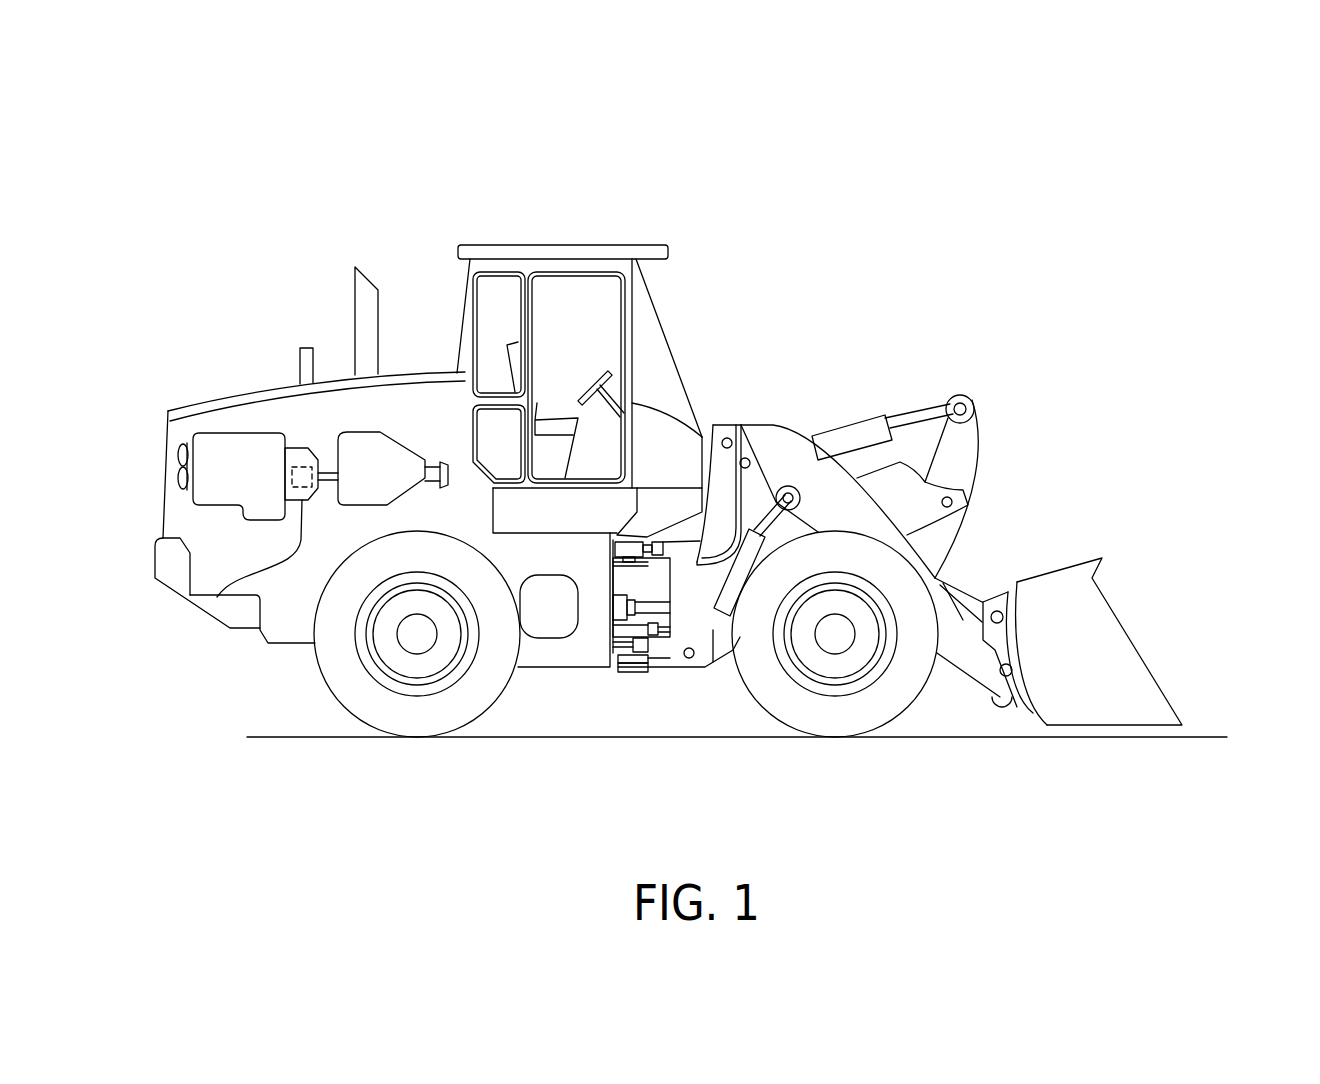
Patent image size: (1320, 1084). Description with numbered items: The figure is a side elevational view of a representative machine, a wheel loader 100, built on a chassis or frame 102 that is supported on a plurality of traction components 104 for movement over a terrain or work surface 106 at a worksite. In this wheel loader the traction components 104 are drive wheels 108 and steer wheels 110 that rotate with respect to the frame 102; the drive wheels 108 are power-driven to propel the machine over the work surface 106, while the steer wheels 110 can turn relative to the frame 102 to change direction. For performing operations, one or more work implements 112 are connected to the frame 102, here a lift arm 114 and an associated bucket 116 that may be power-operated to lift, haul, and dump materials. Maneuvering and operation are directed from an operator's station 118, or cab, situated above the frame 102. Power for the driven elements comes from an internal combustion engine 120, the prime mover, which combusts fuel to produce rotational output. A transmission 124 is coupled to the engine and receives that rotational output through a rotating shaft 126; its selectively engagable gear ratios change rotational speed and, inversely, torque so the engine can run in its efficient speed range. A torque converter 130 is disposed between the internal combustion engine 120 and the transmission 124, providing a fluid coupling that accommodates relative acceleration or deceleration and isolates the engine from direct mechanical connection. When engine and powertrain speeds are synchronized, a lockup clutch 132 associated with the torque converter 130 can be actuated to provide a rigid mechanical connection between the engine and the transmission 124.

The wheel loader 100 is at (338, 162).
The frame 102 is at (563, 668).
The traction components 104 is at (305, 684).
The work surface 106 is at (1202, 735).
The drive wheels 108 is at (415, 712).
The steer wheels 110 is at (862, 710).
The work implements 112 is at (242, 607).
The lift arm 114 is at (835, 480).
The bucket 116 is at (1125, 630).
The operator's station 118 is at (571, 250).
The internal combustion engine 120 is at (240, 457).
The transmission 124 is at (383, 430).
The rotating shaft 126 is at (328, 467).
The torque converter 130 is at (303, 448).
The lockup clutch 132 is at (217, 597).